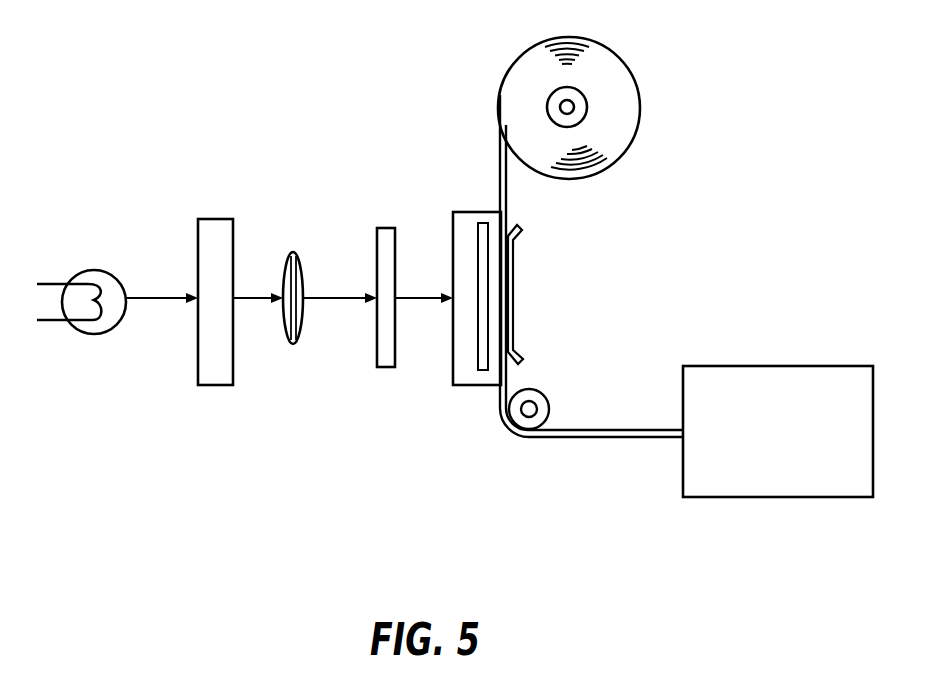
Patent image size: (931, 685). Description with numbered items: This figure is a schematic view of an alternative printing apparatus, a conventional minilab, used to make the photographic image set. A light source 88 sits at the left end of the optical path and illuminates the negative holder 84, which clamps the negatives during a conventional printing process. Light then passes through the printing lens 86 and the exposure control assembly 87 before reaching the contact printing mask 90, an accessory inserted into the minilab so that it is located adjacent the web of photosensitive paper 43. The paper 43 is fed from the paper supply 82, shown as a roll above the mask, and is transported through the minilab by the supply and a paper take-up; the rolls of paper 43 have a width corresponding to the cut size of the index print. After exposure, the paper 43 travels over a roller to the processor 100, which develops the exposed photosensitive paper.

The photosensitive paper 43 is at (499, 171).
The paper supply 82 is at (588, 117).
The negative holder 84 is at (215, 218).
The printing lens 86 is at (293, 343).
The exposure control assembly 87 is at (383, 368).
The light source 88 is at (91, 269).
The contact printing mask 90 is at (482, 385).
The processor 100 is at (763, 366).